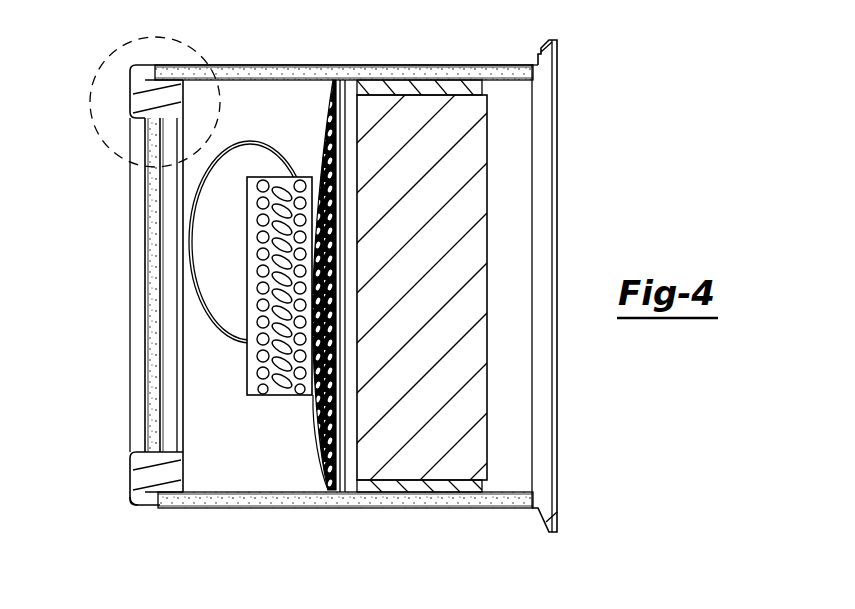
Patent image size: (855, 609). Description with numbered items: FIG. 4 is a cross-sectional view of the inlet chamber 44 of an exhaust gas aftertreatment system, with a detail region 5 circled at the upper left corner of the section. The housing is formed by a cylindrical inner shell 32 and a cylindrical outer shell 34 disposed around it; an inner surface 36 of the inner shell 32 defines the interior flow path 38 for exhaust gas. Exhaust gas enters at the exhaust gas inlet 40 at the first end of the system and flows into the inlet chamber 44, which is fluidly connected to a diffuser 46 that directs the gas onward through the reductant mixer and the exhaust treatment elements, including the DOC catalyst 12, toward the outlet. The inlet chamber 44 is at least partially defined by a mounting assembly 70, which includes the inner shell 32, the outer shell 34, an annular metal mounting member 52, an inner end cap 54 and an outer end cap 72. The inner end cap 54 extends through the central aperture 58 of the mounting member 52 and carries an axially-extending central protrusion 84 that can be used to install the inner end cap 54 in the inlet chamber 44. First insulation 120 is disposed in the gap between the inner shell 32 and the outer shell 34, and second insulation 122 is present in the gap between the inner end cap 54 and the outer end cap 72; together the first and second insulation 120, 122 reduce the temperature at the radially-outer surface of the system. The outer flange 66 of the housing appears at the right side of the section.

The detail region 5 is at (112, 52).
The DOC catalyst 12 is at (422, 456).
The inner shell 32 is at (350, 80).
The outer shell 34 is at (335, 66).
The inner surface 36 is at (213, 63).
The flow path 38 is at (258, 476).
The exhaust gas inlet 40 is at (215, 222).
The inlet chamber 44 is at (190, 348).
The diffuser 46 is at (313, 394).
The mounting member 52 is at (147, 460).
The inner end cap 54 is at (158, 205).
The central aperture 58 is at (168, 380).
The outer flange 66 is at (527, 266).
The mounting assembly 70 is at (122, 500).
The outer end cap 72 is at (145, 193).
The central protrusion 84 is at (148, 273).
The first insulation 120 is at (415, 76).
The second insulation 122 is at (150, 398).